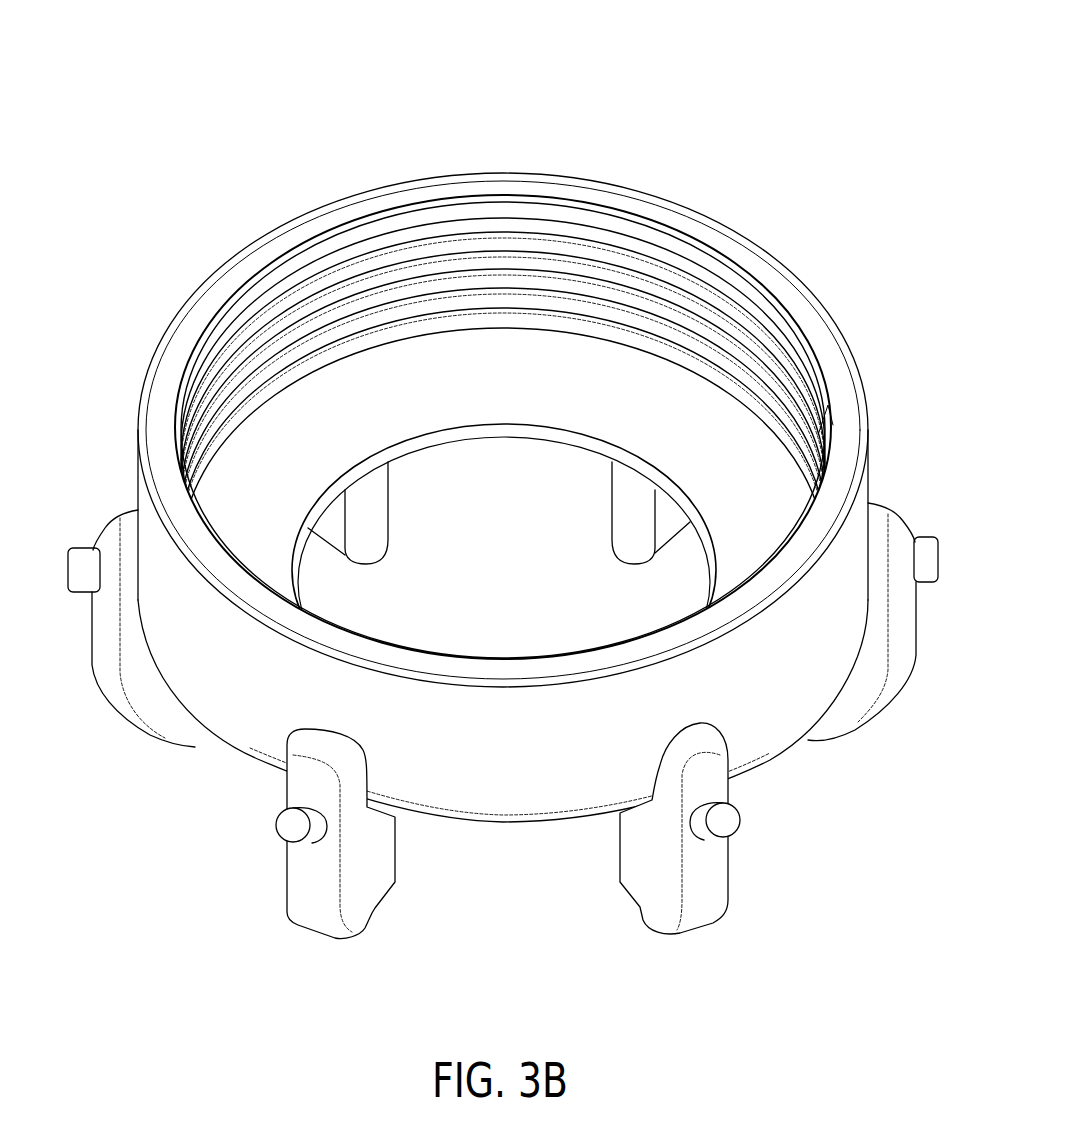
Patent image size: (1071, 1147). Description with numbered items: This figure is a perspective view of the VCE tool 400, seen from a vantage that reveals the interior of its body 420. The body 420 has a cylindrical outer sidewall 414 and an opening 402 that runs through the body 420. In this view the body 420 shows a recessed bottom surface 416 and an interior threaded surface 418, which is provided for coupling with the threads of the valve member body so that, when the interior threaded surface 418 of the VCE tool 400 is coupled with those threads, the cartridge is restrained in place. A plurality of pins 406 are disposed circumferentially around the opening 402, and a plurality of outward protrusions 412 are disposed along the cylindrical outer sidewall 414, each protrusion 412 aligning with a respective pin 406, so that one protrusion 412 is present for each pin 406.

The VCE tool 400 is at (288, 88).
The opening 402 is at (507, 560).
The pin 406 is at (720, 875).
The outward protrusion 412 is at (927, 555).
The cylindrical outer sidewall 414 is at (720, 688).
The recessed bottom surface 416 is at (356, 428).
The interior threaded surface 418 is at (648, 308).
The body 420 is at (509, 884).